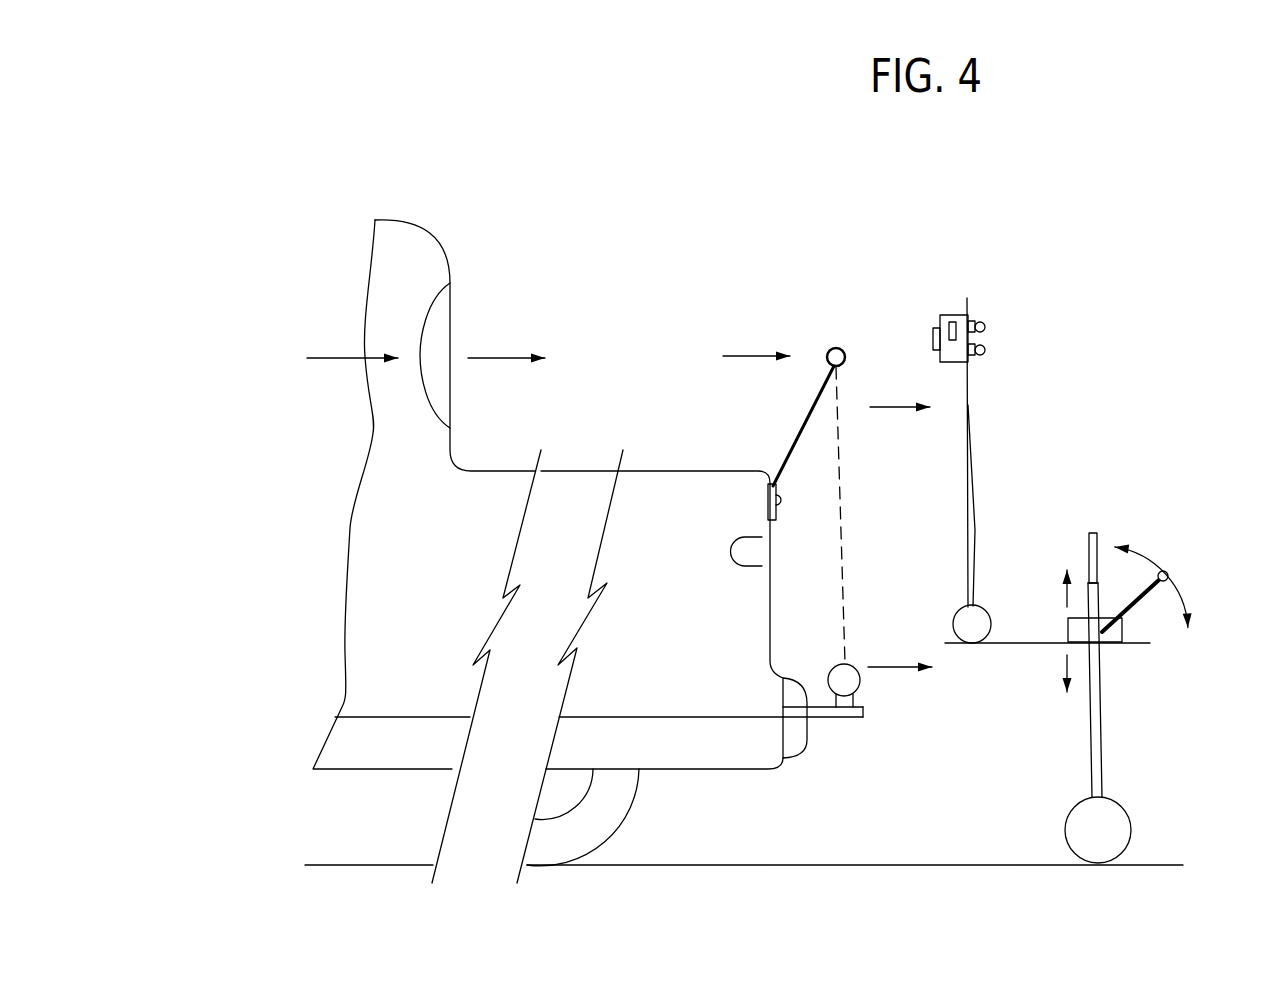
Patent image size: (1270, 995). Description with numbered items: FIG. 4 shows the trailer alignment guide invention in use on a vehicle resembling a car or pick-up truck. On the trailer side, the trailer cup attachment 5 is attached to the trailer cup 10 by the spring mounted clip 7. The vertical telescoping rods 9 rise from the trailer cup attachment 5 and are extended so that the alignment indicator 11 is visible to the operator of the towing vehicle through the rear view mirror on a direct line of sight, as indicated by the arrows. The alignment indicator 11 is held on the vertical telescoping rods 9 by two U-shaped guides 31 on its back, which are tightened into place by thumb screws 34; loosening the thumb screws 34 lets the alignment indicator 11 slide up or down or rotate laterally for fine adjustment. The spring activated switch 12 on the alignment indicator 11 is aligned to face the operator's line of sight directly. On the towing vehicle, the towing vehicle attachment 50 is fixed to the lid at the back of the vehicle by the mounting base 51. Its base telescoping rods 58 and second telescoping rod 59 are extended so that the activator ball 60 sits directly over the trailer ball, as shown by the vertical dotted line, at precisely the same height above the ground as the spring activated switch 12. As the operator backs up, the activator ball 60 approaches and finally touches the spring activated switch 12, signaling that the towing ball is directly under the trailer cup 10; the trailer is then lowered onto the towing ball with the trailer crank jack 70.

The trailer cup attachment 5 is at (996, 481).
The spring mounted clip 7 is at (977, 642).
The vertical telescoping rods 9 is at (967, 300).
The trailer cup 10 is at (977, 607).
The alignment indicator 11 is at (957, 315).
The spring activated switch 12 is at (933, 332).
The U-shaped guides 31 is at (973, 317).
The thumb screws 34 is at (986, 325).
The towing vehicle attachment 50 is at (770, 432).
The mounting base 51 is at (772, 522).
The base telescoping rods 58 is at (768, 430).
The second telescoping rod 59 is at (808, 428).
The activator ball 60 is at (832, 347).
The trailer crank jack 70 is at (1142, 558).